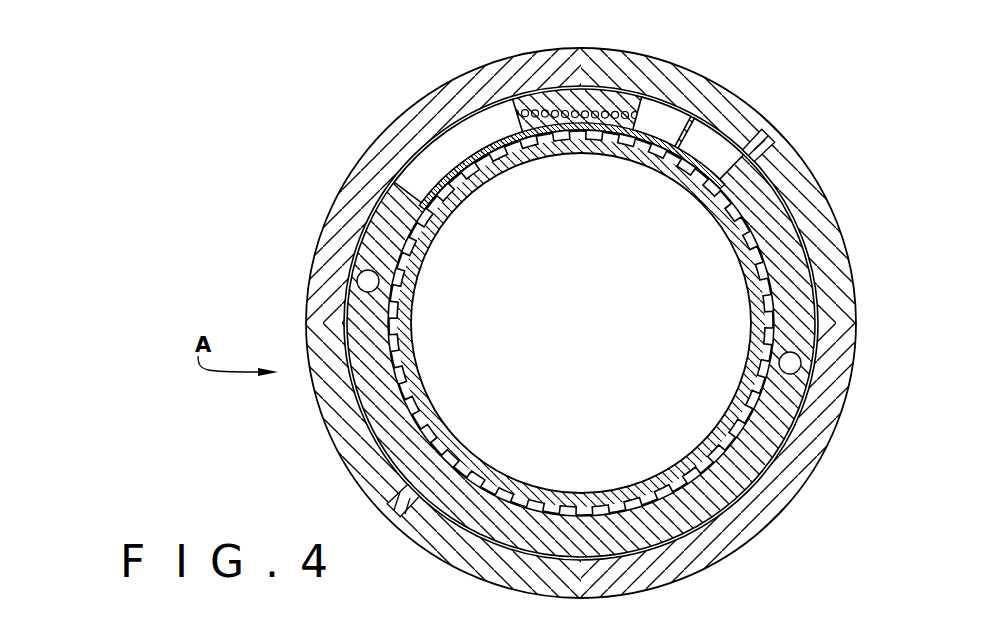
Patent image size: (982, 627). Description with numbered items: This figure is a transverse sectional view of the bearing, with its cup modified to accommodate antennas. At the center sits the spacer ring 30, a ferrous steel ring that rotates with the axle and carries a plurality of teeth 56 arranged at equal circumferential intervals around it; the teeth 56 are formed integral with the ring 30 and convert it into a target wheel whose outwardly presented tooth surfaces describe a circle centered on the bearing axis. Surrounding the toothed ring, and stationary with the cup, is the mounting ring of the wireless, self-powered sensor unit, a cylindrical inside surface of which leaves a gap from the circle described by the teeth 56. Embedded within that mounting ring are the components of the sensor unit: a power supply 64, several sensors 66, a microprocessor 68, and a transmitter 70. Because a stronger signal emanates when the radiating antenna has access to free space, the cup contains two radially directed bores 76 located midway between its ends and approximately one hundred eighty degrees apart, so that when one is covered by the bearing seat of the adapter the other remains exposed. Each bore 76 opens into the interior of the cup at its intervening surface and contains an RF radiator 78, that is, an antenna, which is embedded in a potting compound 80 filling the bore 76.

The spacer ring 30 is at (423, 412).
The teeth 56 is at (412, 190).
The power supply 64 is at (447, 147).
The sensors 66 is at (368, 283).
The microprocessor 68 is at (678, 115).
The transmitter 70 is at (712, 147).
The radially directed bores 76 is at (797, 155).
The RF radiator 78 is at (767, 128).
The potting compound 80 is at (760, 137).